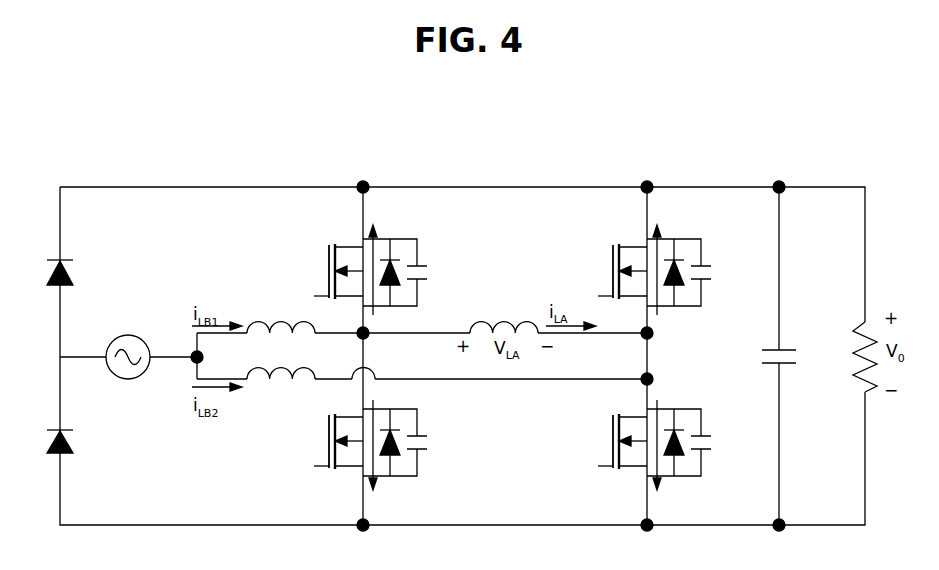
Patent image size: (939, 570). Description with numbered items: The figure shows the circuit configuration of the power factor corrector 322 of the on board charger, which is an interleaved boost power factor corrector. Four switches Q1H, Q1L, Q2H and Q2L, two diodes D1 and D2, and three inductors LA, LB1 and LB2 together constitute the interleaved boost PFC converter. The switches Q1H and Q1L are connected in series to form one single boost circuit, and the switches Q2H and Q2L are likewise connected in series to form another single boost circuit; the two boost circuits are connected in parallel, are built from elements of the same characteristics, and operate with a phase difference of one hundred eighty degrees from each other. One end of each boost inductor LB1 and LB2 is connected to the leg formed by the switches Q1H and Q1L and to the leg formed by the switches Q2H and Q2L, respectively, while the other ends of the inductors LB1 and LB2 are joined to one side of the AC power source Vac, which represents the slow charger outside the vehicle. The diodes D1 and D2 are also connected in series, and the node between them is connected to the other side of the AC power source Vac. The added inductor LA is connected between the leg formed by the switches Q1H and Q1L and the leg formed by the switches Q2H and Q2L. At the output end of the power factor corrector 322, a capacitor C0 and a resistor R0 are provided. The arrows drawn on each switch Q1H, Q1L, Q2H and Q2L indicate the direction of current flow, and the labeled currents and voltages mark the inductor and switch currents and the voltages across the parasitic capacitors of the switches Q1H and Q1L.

The power factor corrector 322 is at (540, 154).
The diode D1 is at (45, 276).
The diode D2 is at (45, 445).
The AC power source Vac is at (128, 344).
The boost inductor LB1 is at (281, 314).
The boost inductor LB2 is at (281, 360).
The inductor LA is at (504, 315).
The switch Q1H is at (362, 272).
The switch Q1L is at (362, 442).
The switch Q2H is at (646, 272).
The switch Q2L is at (646, 442).
The capacitor C0 is at (765, 353).
The resistor R0 is at (851, 357).